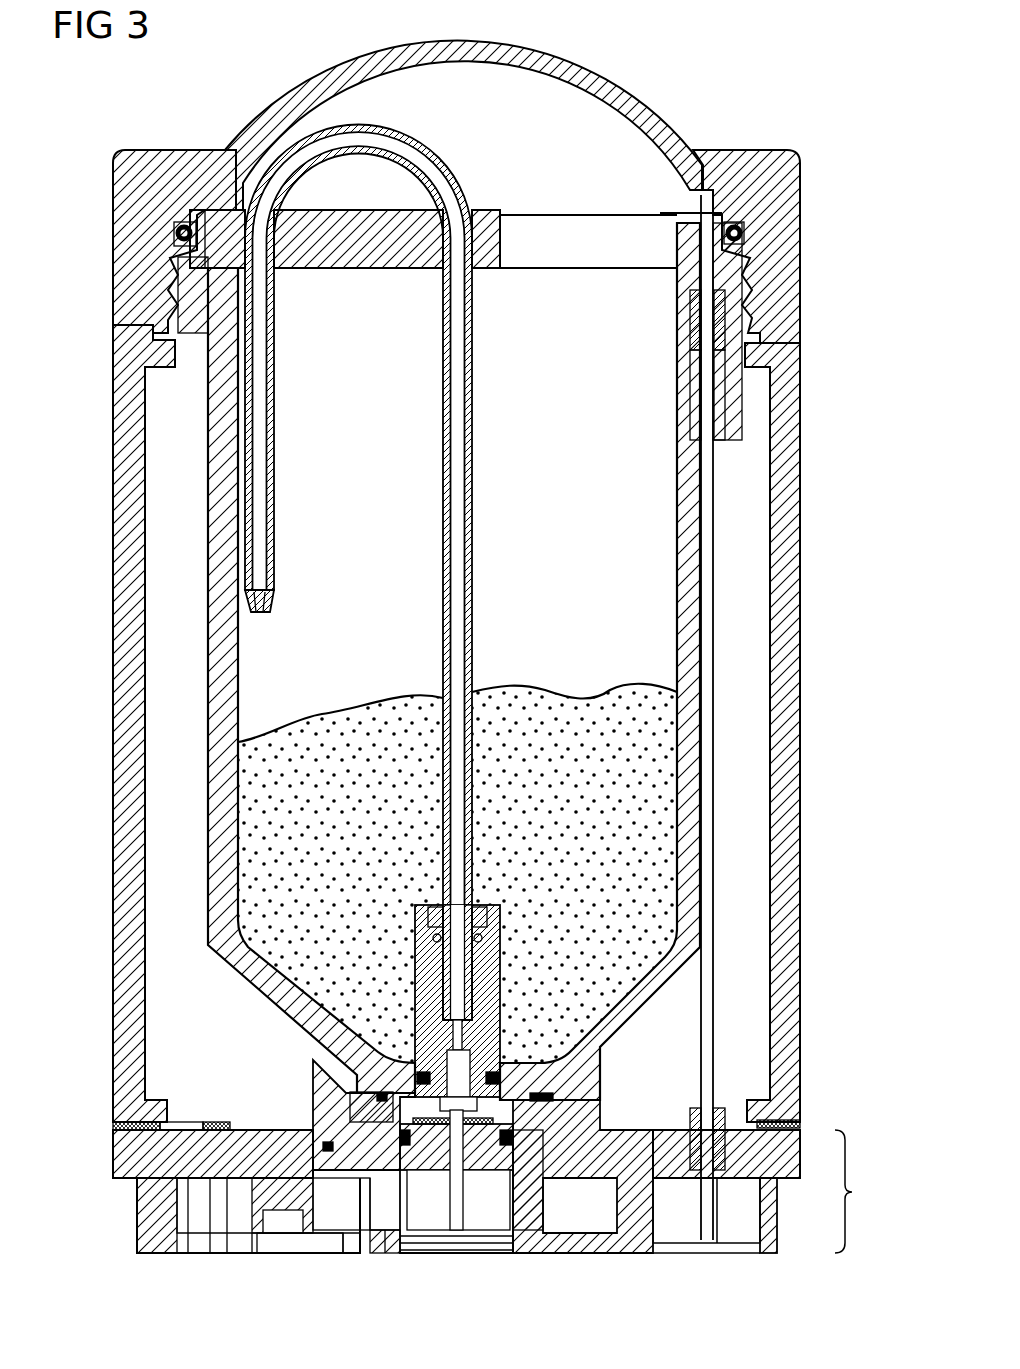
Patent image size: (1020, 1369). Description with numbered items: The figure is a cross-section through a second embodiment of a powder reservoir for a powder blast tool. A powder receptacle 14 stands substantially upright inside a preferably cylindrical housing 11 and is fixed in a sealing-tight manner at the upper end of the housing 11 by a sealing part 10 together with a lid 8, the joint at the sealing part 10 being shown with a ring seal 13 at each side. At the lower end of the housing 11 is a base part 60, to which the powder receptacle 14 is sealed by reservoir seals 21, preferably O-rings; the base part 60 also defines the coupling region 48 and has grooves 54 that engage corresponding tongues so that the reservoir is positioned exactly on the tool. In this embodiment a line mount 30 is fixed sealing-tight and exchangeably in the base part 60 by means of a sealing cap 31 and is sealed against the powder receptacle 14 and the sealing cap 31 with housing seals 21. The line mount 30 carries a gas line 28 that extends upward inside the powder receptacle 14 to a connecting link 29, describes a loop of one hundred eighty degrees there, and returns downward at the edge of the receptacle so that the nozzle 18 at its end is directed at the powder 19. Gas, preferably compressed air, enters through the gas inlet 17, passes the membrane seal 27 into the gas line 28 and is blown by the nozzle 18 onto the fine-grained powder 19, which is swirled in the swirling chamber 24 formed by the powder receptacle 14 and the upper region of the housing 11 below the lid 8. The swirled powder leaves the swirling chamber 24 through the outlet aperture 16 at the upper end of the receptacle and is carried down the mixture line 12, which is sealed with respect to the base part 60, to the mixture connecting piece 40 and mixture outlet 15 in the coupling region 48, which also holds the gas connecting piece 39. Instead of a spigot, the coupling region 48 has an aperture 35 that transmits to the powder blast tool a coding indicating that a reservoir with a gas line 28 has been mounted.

The lid 8 is at (622, 100).
The sealing part 10 is at (795, 233).
The housing 11 is at (793, 535).
The mixture line 12 is at (706, 1014).
The sealing ring 13 is at (180, 236).
The powder receptacle 14 is at (238, 690).
The mixture outlet 15 is at (707, 1242).
The outlet aperture 16 is at (680, 213).
The gas inlet 17 is at (458, 1233).
The nozzle 18 is at (262, 614).
The powder 19 is at (590, 700).
The seals 21 is at (383, 1099).
The swirling chamber 24 is at (536, 280).
The membrane seal 27 is at (480, 1125).
The gas line 28 is at (473, 423).
The connecting link 29 is at (352, 262).
The line mount 30 is at (538, 1208).
The sealing cap 31 is at (392, 1250).
The aperture 35 is at (290, 1247).
The gas connecting piece 39 is at (460, 1218).
The mixture connecting piece 40 is at (712, 1224).
The coupling region 48 is at (860, 1191).
The grooves 54 is at (122, 1215).
The base part 60 is at (120, 1162).